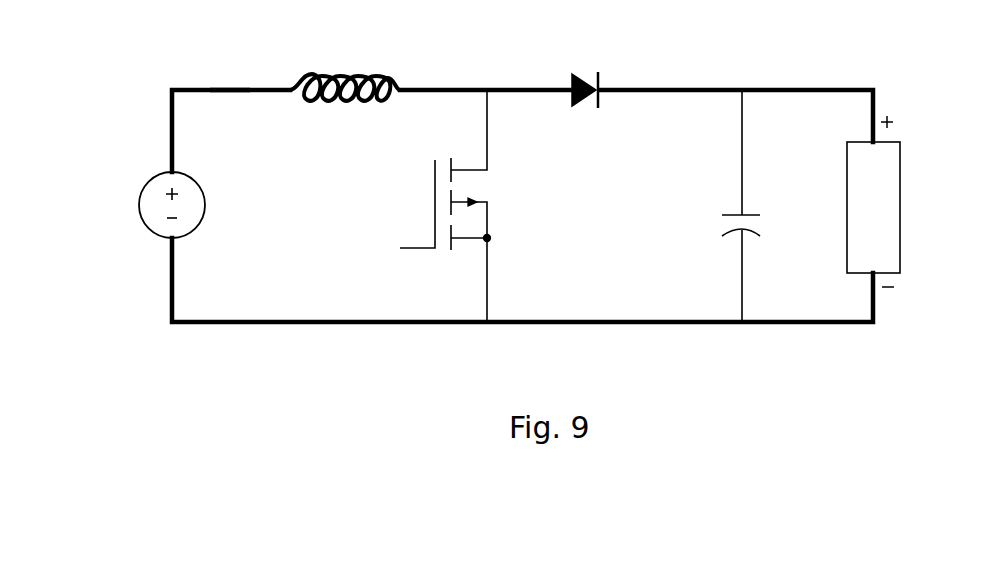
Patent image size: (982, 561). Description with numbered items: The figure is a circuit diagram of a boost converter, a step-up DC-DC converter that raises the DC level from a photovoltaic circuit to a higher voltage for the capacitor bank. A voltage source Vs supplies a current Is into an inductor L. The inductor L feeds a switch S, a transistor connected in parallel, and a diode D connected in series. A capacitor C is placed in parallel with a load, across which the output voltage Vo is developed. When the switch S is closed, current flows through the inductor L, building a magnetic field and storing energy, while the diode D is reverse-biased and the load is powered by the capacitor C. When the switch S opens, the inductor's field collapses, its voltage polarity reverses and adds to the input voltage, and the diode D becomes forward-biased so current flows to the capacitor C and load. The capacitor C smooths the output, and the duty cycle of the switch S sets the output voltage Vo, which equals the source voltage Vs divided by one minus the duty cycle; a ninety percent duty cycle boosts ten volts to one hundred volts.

The source current Is is at (230, 75).
The inductor L is at (345, 72).
The switch S is at (455, 206).
The diode D is at (585, 107).
The capacitor C is at (727, 206).
The voltage source Vs is at (156, 205).
The output voltage Vo is at (887, 201).